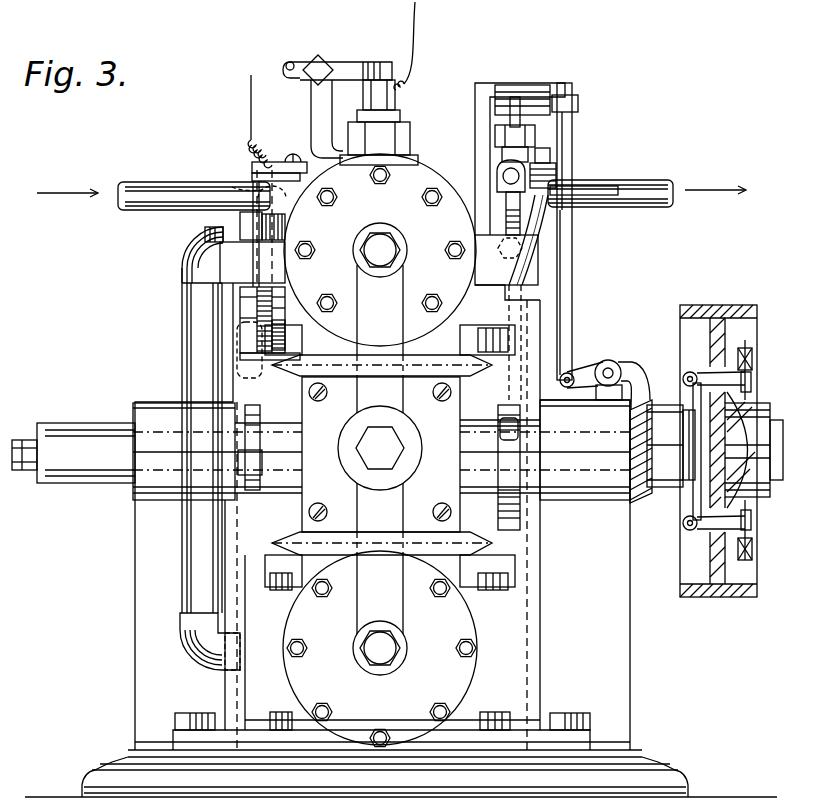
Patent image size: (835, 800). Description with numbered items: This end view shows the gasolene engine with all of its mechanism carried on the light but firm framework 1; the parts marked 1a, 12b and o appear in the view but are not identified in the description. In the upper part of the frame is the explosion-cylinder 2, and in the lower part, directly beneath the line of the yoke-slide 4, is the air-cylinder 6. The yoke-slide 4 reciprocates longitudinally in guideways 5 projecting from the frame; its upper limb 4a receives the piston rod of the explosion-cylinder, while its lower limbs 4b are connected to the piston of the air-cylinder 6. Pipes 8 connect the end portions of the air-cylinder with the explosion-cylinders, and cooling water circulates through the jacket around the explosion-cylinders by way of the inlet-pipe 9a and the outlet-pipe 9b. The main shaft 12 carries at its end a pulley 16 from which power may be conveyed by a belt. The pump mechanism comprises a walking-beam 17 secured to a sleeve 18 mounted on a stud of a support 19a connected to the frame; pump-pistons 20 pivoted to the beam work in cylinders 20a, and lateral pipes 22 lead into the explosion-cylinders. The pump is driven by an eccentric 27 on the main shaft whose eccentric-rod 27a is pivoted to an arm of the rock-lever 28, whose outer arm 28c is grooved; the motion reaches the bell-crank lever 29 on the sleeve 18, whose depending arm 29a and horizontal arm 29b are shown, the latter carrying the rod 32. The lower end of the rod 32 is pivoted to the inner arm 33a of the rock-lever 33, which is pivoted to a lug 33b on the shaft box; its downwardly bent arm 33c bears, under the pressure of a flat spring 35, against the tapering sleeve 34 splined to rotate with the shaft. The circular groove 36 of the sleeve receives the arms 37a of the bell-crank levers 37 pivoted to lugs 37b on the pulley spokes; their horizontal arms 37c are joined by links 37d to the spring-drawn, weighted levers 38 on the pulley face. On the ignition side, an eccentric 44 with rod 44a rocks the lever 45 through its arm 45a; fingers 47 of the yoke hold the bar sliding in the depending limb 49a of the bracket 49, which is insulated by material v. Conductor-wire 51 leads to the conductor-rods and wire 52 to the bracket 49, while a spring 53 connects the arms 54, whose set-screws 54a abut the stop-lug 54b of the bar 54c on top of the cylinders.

The framework 1 is at (222, 688).
The frame standards 1a is at (382, 460).
The explosion-cylinder 2 is at (380, 250).
The yoke-slide 4 is at (381, 454).
The upper limb of yoke-slide 4a is at (380, 300).
The lower limbs of yoke-slide 4b is at (380, 603).
The guideways 5 is at (386, 527).
The air-cylinder 6 is at (380, 649).
The pipes 8 is at (195, 525).
The inlet-pipe 9a is at (138, 188).
The outlet-pipe 9b is at (660, 184).
The shaft 12 is at (410, 450).
The shaft nut 12b is at (20, 470).
The pulley 16 is at (722, 305).
The walking-beam 17 is at (500, 95).
The sleeve 18 is at (525, 84).
The support 19a is at (495, 143).
The pump-pistons 20 is at (512, 118).
The pump cylinders 20a is at (500, 150).
The lateral pipes 22 is at (508, 198).
The eccentric 27 is at (498, 503).
The eccentric-rod 27a is at (548, 220).
The rock-lever 28 is at (560, 178).
The outer arm of rock-lever 28c is at (548, 153).
The bell-crank lever 29 is at (570, 88).
The depending arm of bell-crank lever 29a is at (570, 130).
The horizontal arm of bell-crank lever 29b is at (576, 103).
The rod 32 is at (573, 272).
The rock-lever 33 is at (613, 370).
The inner arm of rock-lever 33a is at (585, 368).
The lug 33b is at (605, 392).
The arm of rock-lever 33c is at (640, 370).
The sleeve 34 is at (651, 451).
The flat spring 35 is at (568, 388).
The circular groove 36 is at (688, 482).
The bell-crank levers 37 is at (690, 373).
The arms of bell-crank levers 37a is at (693, 396).
The lugs 37b is at (705, 372).
The horizontal arms of bell-crank levers 37c is at (742, 372).
The links 37d is at (752, 378).
The levers 38 is at (752, 352).
The eccentric 44 is at (258, 492).
The eccentric-rod 44a is at (238, 340).
The rock-lever 45 is at (240, 300).
The arm of rock-lever 45a is at (268, 340).
The finger 47 is at (247, 196).
The bracket 49 is at (252, 165).
The depending limb of bracket 49a is at (252, 174).
The conductor-wire 51 is at (417, 42).
The wire 52 is at (250, 98).
The spring 53 is at (288, 63).
The arms 54 is at (352, 66).
The adjusting set-screw 54a is at (318, 56).
The stop-lug 54b is at (311, 108).
The bar 54c is at (342, 145).
The rod o is at (605, 188).
The insulating material v is at (280, 197).